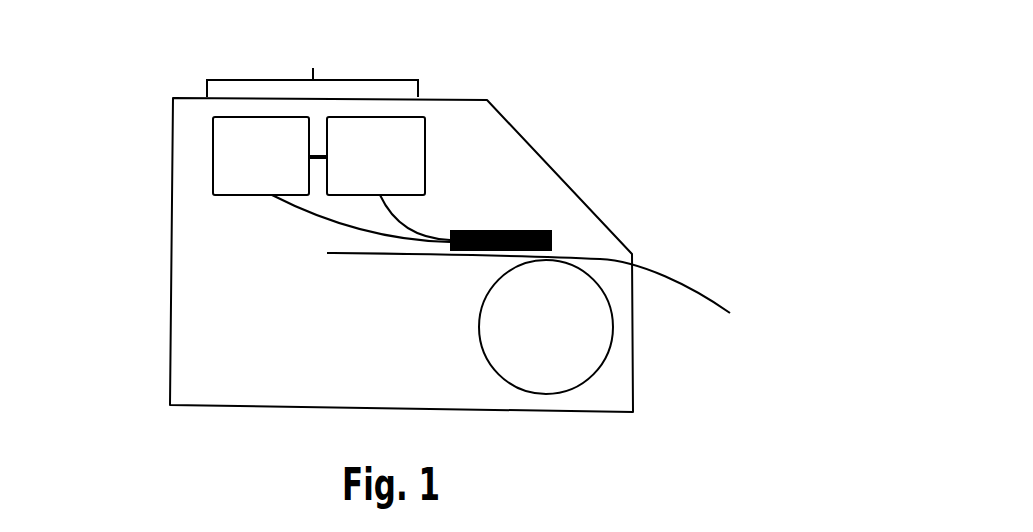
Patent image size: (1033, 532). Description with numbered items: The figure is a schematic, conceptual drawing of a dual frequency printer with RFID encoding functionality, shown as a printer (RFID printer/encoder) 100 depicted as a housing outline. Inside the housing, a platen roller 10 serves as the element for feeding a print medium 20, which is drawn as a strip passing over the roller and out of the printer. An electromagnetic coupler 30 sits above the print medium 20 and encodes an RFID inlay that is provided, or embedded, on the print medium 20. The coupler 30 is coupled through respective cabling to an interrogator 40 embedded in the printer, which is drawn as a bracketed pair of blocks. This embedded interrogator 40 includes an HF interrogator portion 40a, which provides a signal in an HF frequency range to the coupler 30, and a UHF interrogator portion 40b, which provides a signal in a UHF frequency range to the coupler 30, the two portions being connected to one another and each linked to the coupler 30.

The printer 100 is at (720, 44).
The platen roller 10 is at (583, 337).
The print medium 20 is at (720, 302).
The electromagnetic coupler 30 is at (543, 225).
The interrogator 40 is at (306, 135).
The HF interrogator portion 40a is at (213, 148).
The UHF interrogator portion 40b is at (408, 142).